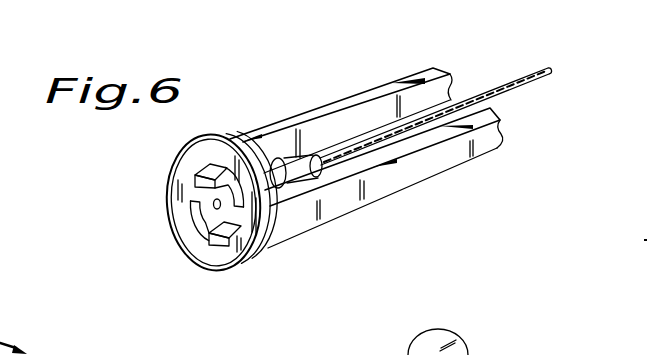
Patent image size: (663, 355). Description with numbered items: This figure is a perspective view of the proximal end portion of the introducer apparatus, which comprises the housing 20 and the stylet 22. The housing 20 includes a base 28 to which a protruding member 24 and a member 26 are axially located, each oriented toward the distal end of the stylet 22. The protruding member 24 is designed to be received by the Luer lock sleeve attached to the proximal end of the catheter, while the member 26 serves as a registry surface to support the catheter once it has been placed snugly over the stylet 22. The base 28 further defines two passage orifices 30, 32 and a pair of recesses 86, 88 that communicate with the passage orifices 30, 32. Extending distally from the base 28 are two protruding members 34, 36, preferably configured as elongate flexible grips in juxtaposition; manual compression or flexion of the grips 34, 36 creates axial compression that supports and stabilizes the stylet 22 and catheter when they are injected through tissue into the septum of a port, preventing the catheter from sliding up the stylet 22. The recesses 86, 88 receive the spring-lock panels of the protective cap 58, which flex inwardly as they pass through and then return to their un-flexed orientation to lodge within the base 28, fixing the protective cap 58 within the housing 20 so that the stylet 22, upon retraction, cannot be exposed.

The housing 20 is at (361, 69).
The stylet 22 is at (525, 77).
The protruding member 24 is at (311, 178).
The member 26 is at (283, 224).
The base 28 is at (188, 219).
The passage orifice 30 is at (190, 178).
The passage orifice 32 is at (214, 252).
The distally protruding member 34 is at (335, 101).
The distally protruding member 36 is at (397, 186).
The recess 86 is at (210, 160).
The recess 88 is at (212, 248).
The protective cap 58 is at (513, 354).